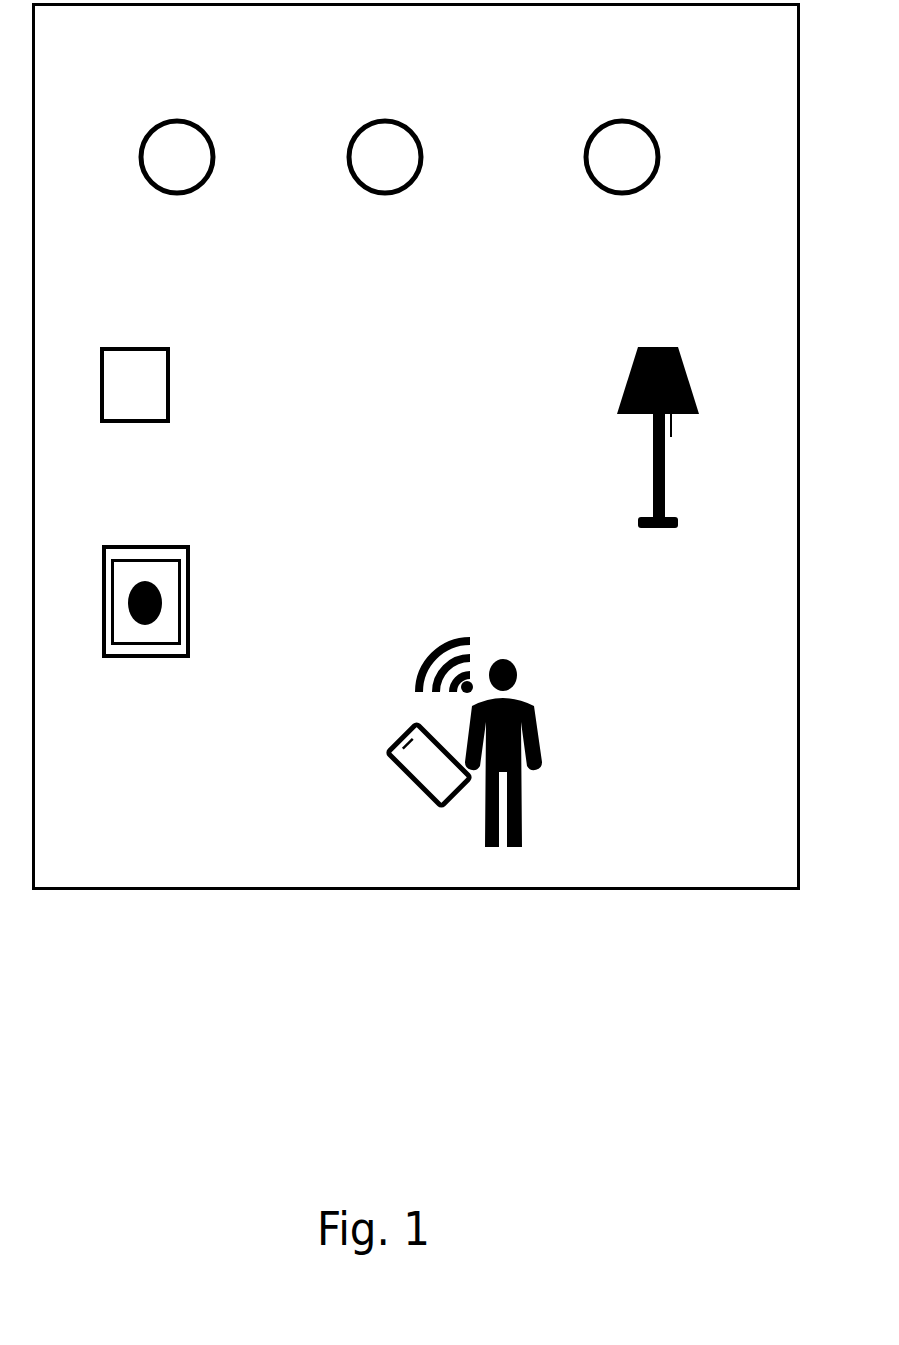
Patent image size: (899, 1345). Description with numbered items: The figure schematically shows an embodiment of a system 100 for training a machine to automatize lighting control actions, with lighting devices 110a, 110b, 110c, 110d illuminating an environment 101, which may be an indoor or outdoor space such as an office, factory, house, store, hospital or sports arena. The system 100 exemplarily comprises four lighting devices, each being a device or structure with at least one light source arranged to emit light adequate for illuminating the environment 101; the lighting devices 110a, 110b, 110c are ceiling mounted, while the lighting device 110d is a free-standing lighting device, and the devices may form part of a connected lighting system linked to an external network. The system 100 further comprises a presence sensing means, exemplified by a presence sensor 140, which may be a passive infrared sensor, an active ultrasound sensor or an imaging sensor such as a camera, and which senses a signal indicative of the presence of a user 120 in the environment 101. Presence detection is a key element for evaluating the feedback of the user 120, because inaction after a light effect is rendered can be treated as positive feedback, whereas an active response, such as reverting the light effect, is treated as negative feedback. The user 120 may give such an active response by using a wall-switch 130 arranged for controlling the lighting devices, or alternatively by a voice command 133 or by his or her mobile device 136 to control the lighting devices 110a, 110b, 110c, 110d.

The system 100 is at (417, 1071).
The environment 101 is at (267, 893).
The lighting device 110a is at (190, 117).
The lighting device 110b is at (397, 118).
The lighting device 110c is at (638, 118).
The lighting device 110d is at (685, 337).
The user 120 is at (521, 686).
The wall-switch 130 is at (167, 537).
The voice command 133 is at (437, 645).
The mobile device 136 is at (400, 738).
The presence sensor 140 is at (163, 347).